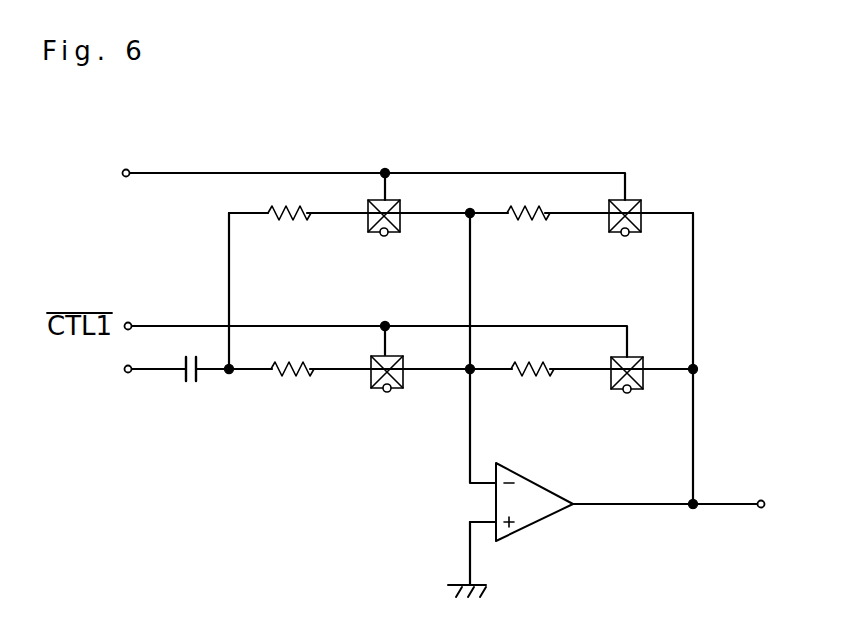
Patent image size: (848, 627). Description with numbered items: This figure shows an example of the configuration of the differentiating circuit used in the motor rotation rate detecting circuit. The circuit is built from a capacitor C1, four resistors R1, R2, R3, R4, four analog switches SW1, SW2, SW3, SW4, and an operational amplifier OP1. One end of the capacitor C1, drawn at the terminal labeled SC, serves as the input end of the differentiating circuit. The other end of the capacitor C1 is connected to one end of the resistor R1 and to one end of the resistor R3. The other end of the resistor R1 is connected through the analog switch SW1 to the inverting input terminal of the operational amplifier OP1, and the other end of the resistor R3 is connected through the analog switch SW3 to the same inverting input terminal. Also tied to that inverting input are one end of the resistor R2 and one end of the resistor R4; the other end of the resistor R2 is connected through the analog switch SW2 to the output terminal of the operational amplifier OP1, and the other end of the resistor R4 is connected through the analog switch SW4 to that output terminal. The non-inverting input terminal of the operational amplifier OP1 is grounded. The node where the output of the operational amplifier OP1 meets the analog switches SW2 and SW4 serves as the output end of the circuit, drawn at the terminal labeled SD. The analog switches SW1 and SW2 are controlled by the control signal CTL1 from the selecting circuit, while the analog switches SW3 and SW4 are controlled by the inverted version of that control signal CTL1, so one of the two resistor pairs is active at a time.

The control signal CTL1 is at (90, 174).
The signal input terminal SC is at (105, 369).
The output terminal SD is at (782, 505).
The capacitor C1 is at (193, 387).
The resistor R1 is at (291, 227).
The resistor R2 is at (530, 227).
The resistor R3 is at (294, 383).
The resistor R4 is at (533, 383).
The analog switch SW1 is at (388, 239).
The analog switch SW2 is at (629, 239).
The analog switch SW3 is at (391, 395).
The analog switch SW4 is at (631, 396).
The operational amplifier OP1 is at (541, 527).